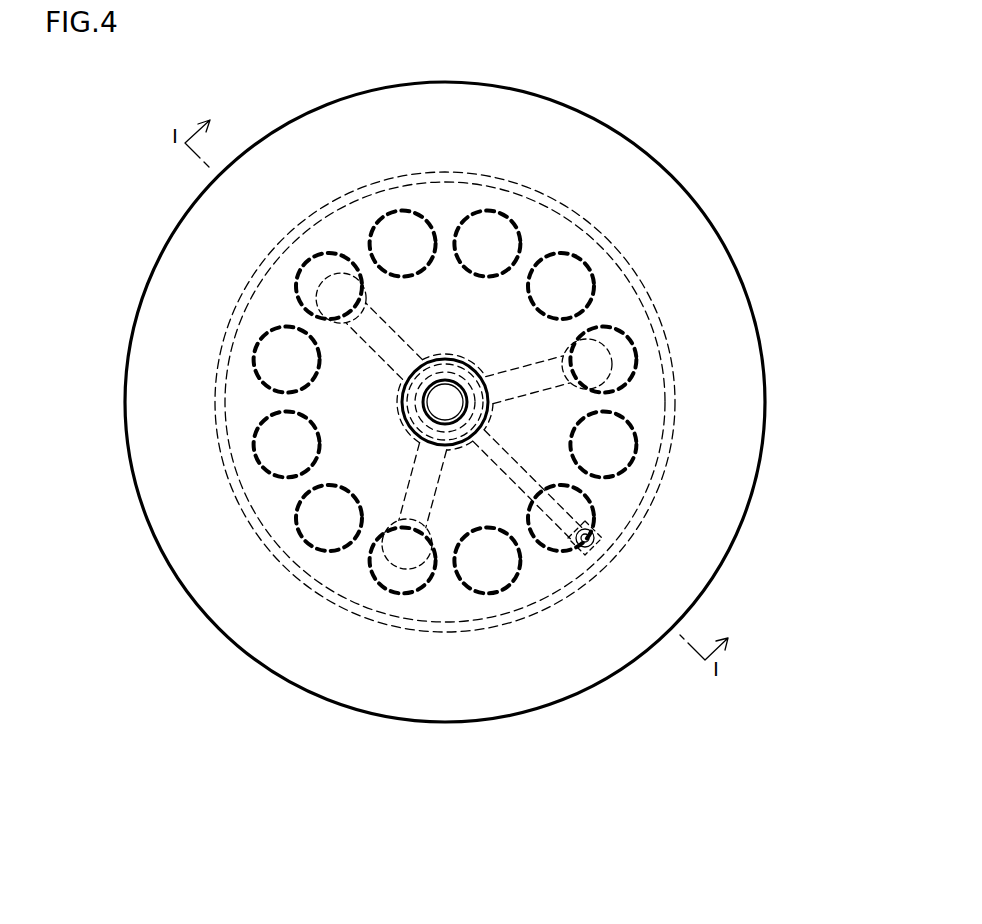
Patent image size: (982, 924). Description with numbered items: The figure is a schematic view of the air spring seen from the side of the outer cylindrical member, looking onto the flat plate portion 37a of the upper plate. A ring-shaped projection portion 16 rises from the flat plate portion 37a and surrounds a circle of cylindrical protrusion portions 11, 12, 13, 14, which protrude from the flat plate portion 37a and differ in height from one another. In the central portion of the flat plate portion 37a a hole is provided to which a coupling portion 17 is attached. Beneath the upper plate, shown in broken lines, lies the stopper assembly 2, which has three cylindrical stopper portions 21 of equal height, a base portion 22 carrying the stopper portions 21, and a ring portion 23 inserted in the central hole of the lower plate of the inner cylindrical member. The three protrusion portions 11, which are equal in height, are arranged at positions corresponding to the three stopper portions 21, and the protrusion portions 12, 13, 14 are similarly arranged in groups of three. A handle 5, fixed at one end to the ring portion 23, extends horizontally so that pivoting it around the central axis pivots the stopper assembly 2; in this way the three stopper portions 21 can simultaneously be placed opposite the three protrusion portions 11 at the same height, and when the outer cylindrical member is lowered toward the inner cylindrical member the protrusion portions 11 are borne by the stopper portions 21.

The stopper assembly 2 is at (343, 542).
The handle 5 is at (530, 477).
The protrusion portion 11 is at (315, 277).
The protrusion portion 12 is at (408, 227).
The protrusion portion 13 is at (570, 273).
The protrusion portion 14 is at (497, 227).
The ring-shaped projection portion 16 is at (647, 283).
The coupling portion 17 is at (446, 413).
The stopper portion 21 is at (417, 553).
The base portion 22 is at (425, 495).
The ring portion 23 is at (448, 443).
The flat plate portion 37a is at (732, 315).